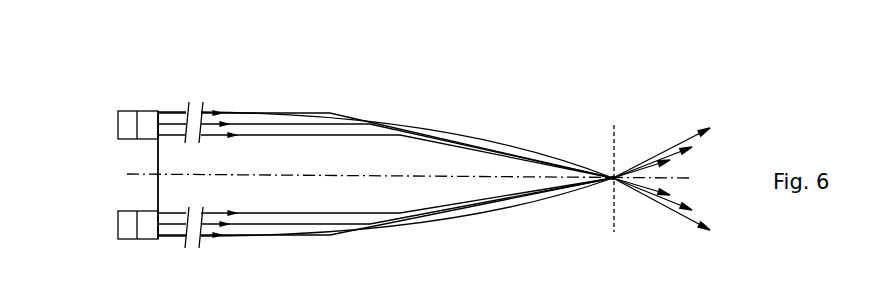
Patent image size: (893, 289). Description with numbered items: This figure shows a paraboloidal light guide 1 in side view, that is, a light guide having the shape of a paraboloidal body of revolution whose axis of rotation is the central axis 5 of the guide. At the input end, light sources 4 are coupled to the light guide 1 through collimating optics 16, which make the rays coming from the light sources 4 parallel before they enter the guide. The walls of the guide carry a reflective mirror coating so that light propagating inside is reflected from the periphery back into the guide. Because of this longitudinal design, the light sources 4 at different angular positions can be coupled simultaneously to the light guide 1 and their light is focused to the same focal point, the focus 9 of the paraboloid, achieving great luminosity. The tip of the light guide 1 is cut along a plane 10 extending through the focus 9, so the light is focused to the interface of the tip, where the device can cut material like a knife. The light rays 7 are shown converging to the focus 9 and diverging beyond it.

The light guide 1 is at (400, 127).
The light sources 4 is at (120, 111).
The central axis 5 is at (127, 174).
The light rays 7 is at (278, 135).
The focus 9 is at (613, 178).
The plane 10 is at (614, 125).
The collimating optics 16 is at (154, 110).